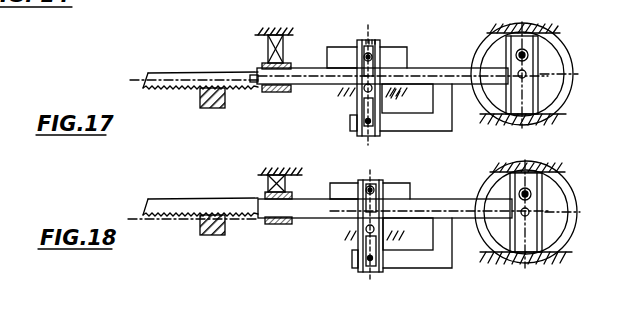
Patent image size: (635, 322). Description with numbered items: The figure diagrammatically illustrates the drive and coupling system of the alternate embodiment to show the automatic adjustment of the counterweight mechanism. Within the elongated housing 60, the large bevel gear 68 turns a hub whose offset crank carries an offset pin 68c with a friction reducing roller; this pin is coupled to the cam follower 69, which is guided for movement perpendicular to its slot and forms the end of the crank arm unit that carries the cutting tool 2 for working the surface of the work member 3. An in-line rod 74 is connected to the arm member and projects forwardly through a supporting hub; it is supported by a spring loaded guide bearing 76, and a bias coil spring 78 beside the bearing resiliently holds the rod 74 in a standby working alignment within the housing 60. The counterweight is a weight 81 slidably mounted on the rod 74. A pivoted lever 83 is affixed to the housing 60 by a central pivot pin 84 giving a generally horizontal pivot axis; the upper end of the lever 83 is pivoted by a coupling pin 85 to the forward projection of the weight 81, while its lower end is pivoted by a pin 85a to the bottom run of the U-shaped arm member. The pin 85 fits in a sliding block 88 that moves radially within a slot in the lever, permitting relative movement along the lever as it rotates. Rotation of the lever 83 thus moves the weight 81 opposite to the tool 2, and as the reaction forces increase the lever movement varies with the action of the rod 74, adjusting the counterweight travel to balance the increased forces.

In FIG. 17, the cutting tool 2 is at (183, 73).
In FIG. 18, the cutting tool 2 is at (208, 199).
In FIG. 17, the work member 3 is at (200, 98).
In FIG. 18, the work member 3 is at (200, 228).
In FIG. 17, the elongated housing 60 is at (300, 32).
In FIG. 18, the elongated housing 60 is at (565, 178).
In FIG. 17, the large bevel gear 68 is at (566, 105).
In FIG. 18, the large bevel gear 68 is at (527, 214).
In FIG. 17, the offset pin 68c is at (528, 55).
In FIG. 18, the offset pin 68c is at (531, 194).
In FIG. 17, the cam follower 69 is at (528, 74).
In FIG. 18, the cam follower 69 is at (545, 220).
In FIG. 17, the in-line rod 74 is at (306, 84).
In FIG. 18, the in-line rod 74 is at (302, 219).
In FIG. 17, the spring loaded guide bearing 76 is at (268, 91).
In FIG. 18, the spring loaded guide bearing 76 is at (268, 224).
In FIG. 17, the bias coil spring 78 is at (268, 58).
In FIG. 18, the bias coil spring 78 is at (266, 188).
In FIG. 17, the weight 81 is at (405, 47).
In FIG. 18, the weight 81 is at (410, 184).
In FIG. 17, the pivoted lever 83 is at (358, 100).
In FIG. 18, the pivoted lever 83 is at (417, 243).
In FIG. 17, the central pivot pin 84 is at (364, 90).
In FIG. 18, the central pivot pin 84 is at (366, 231).
In FIG. 17, the coupling pin 85 is at (365, 40).
In FIG. 18, the coupling pin 85 is at (366, 190).
In FIG. 17, the pin 85a is at (372, 130).
In FIG. 18, the pin 85a is at (376, 272).
In FIG. 17, the sliding block 88 is at (382, 45).